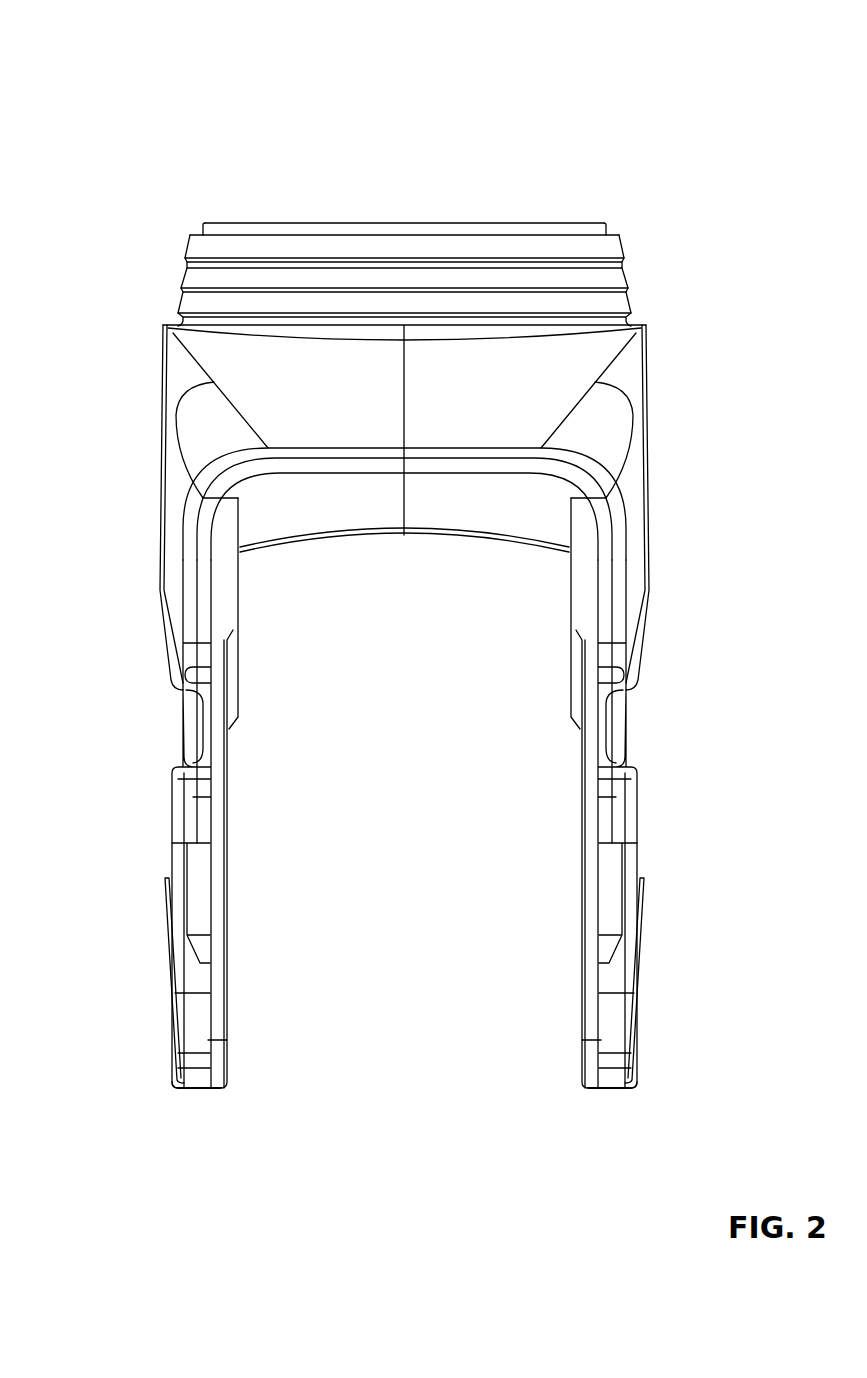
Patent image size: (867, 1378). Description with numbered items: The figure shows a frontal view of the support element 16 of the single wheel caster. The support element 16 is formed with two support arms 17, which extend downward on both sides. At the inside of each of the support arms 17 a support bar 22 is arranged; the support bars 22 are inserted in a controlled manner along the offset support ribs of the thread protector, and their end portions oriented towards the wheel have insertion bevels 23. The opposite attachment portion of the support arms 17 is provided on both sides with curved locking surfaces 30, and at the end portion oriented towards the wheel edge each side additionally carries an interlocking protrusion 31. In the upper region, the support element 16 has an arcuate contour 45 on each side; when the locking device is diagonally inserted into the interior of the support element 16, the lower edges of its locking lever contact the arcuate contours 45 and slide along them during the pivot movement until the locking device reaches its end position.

The support element 16 is at (623, 162).
The arcuate contour 45 is at (602, 540).
The support bar 22 is at (218, 918).
The insertion bevel 23 is at (218, 1065).
The curved locking surface 30 is at (200, 880).
The interlocking protrusion 31 is at (195, 1083).
The support arm 17 is at (215, 1118).